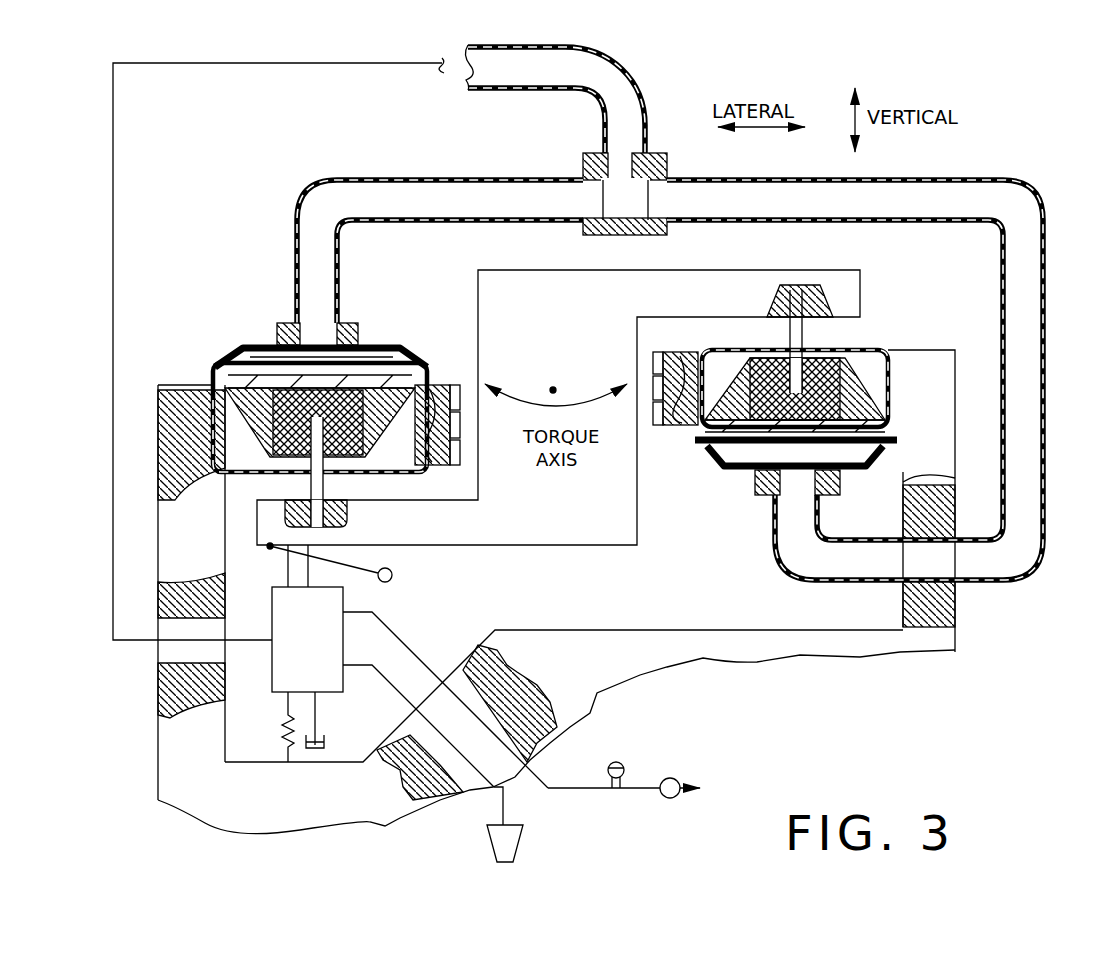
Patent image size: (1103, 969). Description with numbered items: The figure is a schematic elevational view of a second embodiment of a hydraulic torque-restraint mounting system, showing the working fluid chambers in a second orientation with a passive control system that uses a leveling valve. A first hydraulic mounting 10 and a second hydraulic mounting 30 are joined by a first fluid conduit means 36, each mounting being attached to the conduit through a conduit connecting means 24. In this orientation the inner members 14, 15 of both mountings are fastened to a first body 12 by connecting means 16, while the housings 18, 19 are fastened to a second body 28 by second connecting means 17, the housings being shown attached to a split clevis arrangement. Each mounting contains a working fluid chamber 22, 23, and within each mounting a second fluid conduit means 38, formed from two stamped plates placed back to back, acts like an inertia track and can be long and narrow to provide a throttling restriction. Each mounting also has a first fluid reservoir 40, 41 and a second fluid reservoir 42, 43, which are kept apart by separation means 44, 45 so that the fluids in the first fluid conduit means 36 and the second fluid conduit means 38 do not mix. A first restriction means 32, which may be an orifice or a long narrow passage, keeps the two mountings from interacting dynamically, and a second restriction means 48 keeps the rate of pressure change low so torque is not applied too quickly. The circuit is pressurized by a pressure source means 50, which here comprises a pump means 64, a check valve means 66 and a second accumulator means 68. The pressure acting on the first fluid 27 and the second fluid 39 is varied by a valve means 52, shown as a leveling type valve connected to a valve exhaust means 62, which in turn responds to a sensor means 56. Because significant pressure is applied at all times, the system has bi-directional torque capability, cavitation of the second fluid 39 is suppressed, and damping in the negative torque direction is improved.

The first hydraulic mounting 10 is at (601, 418).
The first body 12 is at (573, 326).
The inner member 14 is at (368, 447).
The inner member 15 is at (833, 368).
The connecting means 16 is at (318, 488).
The second connecting means 17 is at (458, 388).
The housing 18 is at (227, 443).
The housing 19 is at (725, 350).
The working fluid chamber 22 is at (250, 387).
The working fluid chamber 23 is at (870, 425).
The conduit connecting means 24 is at (280, 323).
The first fluid 27 is at (495, 70).
The second body 28 is at (593, 676).
The second hydraulic mounting 30 is at (871, 414).
The first restriction means 32 is at (318, 337).
The first fluid conduit means 36 is at (543, 97).
The second fluid conduit means 38 is at (392, 345).
The second fluid 39 is at (215, 360).
The first fluid reservoir 40 is at (368, 342).
The first fluid reservoir 41 is at (855, 465).
The second fluid reservoir 42 is at (257, 340).
The second fluid reservoir 43 is at (720, 462).
The separation means 44 is at (400, 353).
The separation means 45 is at (772, 500).
The second restriction means 48 is at (625, 152).
The pressure source means 50 is at (656, 800).
The valve means 52 is at (316, 661).
The sensor means 56 is at (400, 582).
The valve exhaust means 62 is at (505, 861).
The pump means 64 is at (720, 782).
The check valve means 66 is at (690, 772).
The second accumulator means 68 is at (630, 756).